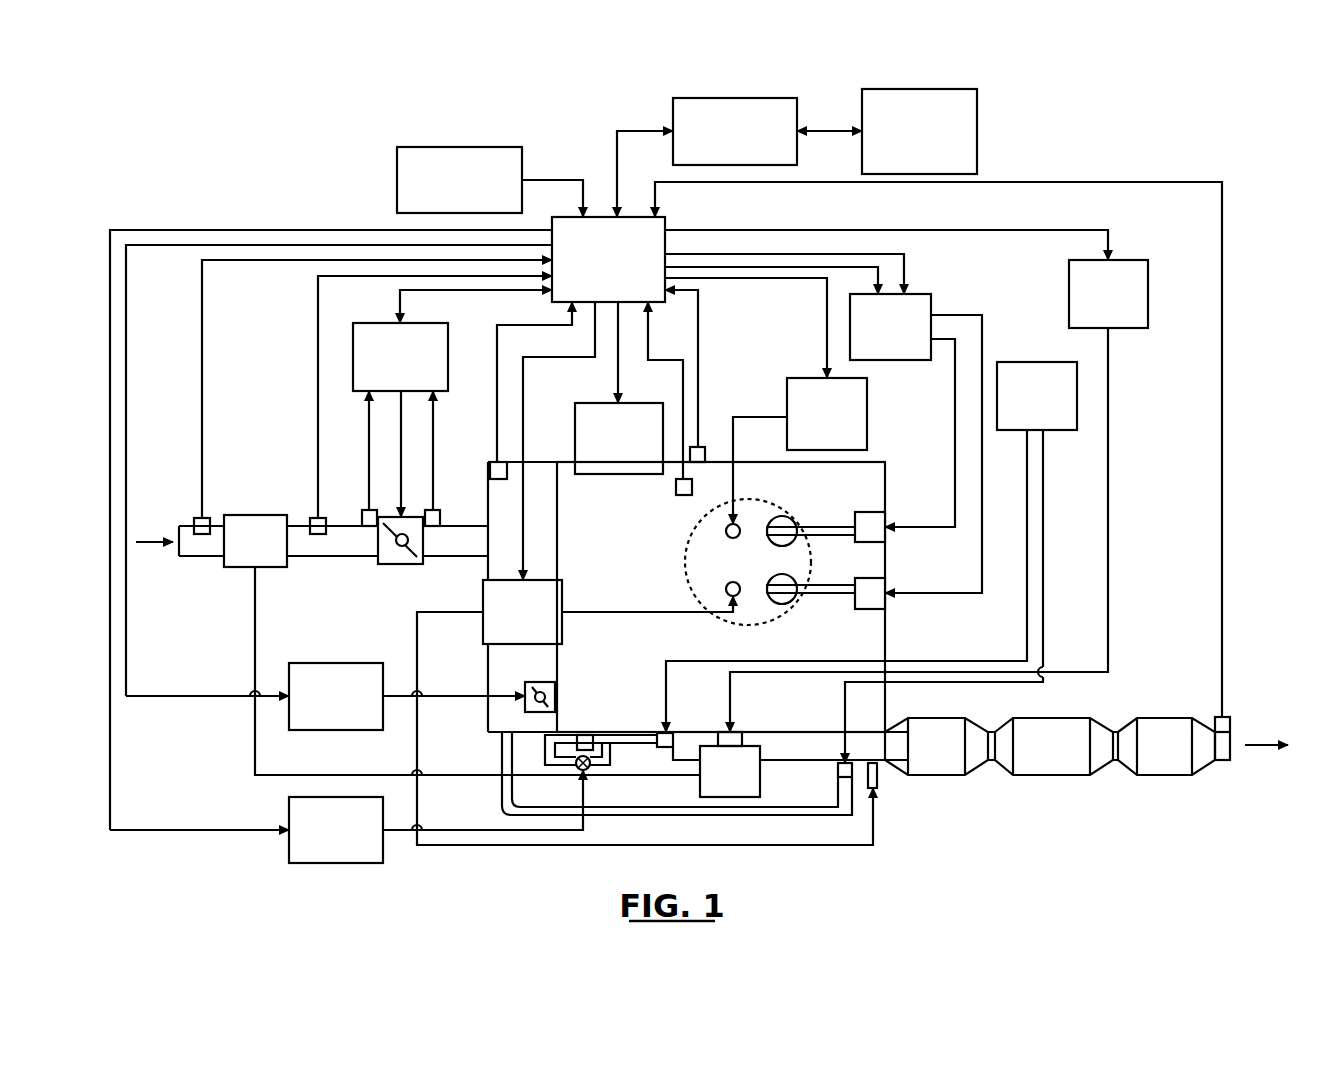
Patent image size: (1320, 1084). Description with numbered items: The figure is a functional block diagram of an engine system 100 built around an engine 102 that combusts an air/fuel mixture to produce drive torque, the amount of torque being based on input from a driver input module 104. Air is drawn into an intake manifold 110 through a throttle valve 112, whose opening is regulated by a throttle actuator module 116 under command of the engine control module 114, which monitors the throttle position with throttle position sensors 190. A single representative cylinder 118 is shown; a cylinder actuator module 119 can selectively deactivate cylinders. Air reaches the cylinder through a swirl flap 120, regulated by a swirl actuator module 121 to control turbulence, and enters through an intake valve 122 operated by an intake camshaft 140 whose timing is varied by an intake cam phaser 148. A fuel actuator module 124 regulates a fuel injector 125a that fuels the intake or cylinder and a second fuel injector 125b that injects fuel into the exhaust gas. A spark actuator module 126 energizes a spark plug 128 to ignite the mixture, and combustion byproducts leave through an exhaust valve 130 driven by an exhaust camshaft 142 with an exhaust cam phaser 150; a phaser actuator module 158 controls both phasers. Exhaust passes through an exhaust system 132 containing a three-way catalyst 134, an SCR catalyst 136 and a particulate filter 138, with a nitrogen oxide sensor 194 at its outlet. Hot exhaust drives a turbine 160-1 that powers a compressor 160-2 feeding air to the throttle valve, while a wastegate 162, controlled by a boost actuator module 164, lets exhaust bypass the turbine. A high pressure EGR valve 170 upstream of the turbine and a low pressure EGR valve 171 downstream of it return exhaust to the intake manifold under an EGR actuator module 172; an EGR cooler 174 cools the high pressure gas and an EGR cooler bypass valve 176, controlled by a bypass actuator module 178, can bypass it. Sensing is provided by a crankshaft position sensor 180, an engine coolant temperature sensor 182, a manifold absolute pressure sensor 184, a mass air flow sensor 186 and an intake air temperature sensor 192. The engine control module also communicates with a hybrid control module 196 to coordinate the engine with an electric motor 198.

The engine system 100 is at (175, 130).
The engine 102 is at (747, 562).
The driver input module 104 is at (397, 180).
The intake manifold 110 is at (496, 598).
The throttle valve 112 is at (400, 565).
The engine control module 114 is at (668, 222).
The throttle actuator module 116 is at (368, 323).
The cylinder 118 is at (744, 565).
The cylinder actuator module 119 is at (635, 403).
The swirl flap 120 is at (525, 703).
The swirl actuator module 121 is at (338, 663).
The intake valve 122 is at (780, 516).
The fuel actuator module 124 is at (548, 645).
The fuel injector 125a is at (726, 589).
The fuel injector 125b is at (880, 778).
The spark actuator module 126 is at (868, 415).
The spark plug 128 is at (726, 531).
The exhaust valve 130 is at (782, 604).
The exhaust system 132 is at (995, 771).
The three-way catalyst 134 is at (935, 718).
The selective catalytic reduction catalyst 136 is at (1053, 718).
The particulate filter 138 is at (1165, 718).
The intake camshaft 140 is at (830, 527).
The exhaust camshaft 142 is at (832, 594).
The intake cam phaser 148 is at (870, 512).
The exhaust cam phaser 150 is at (872, 610).
The phaser actuator module 158 is at (931, 302).
The turbine 160-1 is at (762, 770).
The compressor 160-2 is at (240, 568).
The wastegate 162 is at (745, 736).
The boost actuator module 164 is at (1130, 328).
The high pressure EGR valve 170 is at (663, 748).
The low pressure EGR valve 171 is at (838, 790).
The EGR actuator module 172 is at (1027, 362).
The EGR cooler 174 is at (585, 735).
The EGR cooler bypass valve 176 is at (580, 772).
The bypass actuator module 178 is at (336, 863).
The crankshaft position sensor 180 is at (700, 447).
The engine coolant temperature sensor 182 is at (684, 495).
The manifold absolute pressure sensor 184 is at (497, 462).
The mass air flow sensor 186 is at (318, 518).
The throttle position sensor 190 is at (369, 527).
The intake air temperature sensor 192 is at (195, 518).
The nitrogen oxide sensor 194 is at (1218, 717).
The hybrid control module 196 is at (673, 112).
The electric motor 198 is at (977, 130).